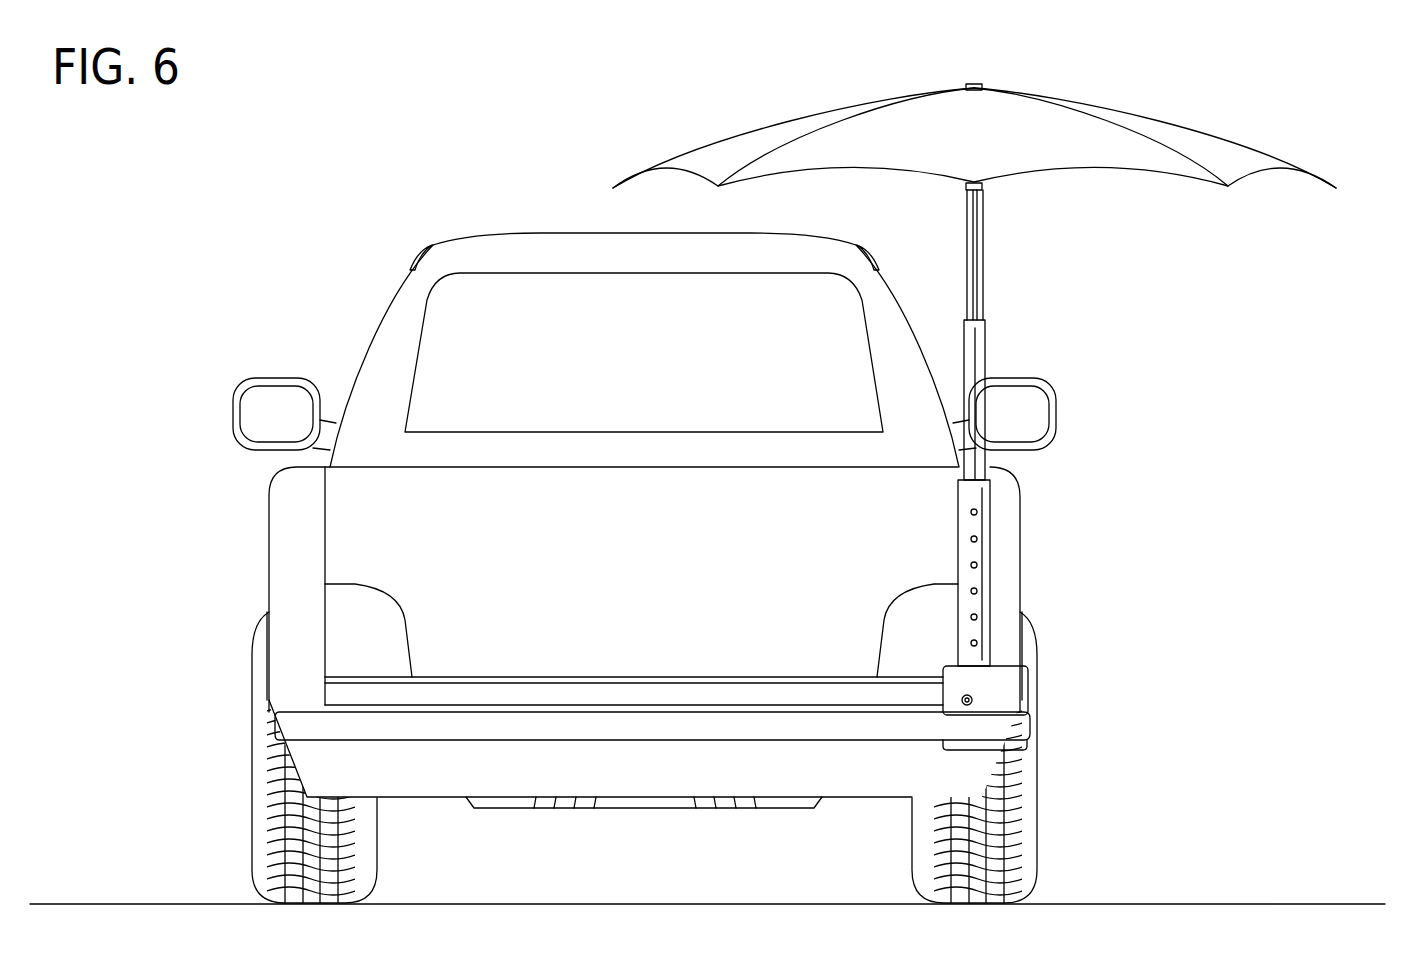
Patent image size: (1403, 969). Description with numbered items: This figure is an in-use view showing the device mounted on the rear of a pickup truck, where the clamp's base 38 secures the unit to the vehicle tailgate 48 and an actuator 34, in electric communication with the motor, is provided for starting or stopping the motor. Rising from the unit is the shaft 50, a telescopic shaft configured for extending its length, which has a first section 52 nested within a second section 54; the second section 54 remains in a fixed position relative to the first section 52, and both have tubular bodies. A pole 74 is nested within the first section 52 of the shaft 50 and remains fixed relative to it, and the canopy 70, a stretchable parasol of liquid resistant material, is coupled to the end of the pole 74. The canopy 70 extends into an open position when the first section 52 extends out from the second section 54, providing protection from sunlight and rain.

The canopy 70 is at (1057, 143).
The pole 74 is at (973, 248).
The first section 52 is at (974, 347).
The second section 54 is at (978, 527).
The actuator 34 is at (972, 698).
The vehicle tailgate 48 is at (998, 725).
The base 38 is at (1018, 747).
The shaft 50 is at (974, 441).